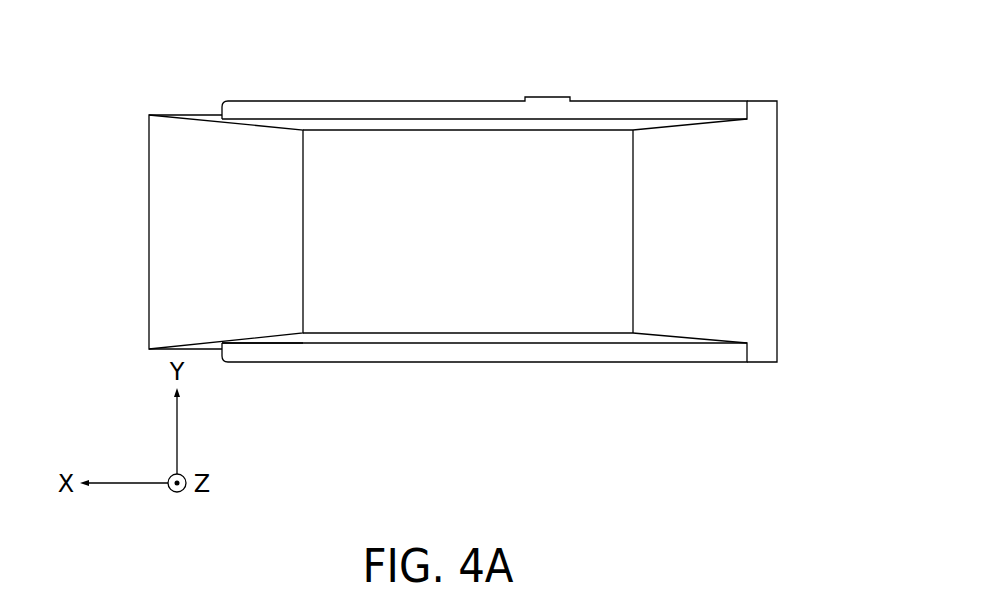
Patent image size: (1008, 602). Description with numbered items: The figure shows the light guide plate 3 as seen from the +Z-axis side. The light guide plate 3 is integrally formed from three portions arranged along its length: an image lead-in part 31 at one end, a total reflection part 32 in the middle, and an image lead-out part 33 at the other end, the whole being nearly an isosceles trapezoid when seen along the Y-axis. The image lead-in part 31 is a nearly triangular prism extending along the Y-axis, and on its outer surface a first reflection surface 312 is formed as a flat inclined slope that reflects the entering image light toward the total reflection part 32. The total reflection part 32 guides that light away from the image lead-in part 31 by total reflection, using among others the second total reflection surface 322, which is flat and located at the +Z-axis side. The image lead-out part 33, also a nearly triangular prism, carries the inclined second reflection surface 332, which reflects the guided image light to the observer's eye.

The light guide plate 3 is at (115, 115).
The image lead-in part 31 is at (708, 137).
The first reflection surface 312 is at (763, 194).
The total reflection part 32 is at (471, 143).
The second total reflection surface 322 is at (483, 316).
The image lead-out part 33 is at (202, 132).
The second reflection surface 332 is at (257, 323).